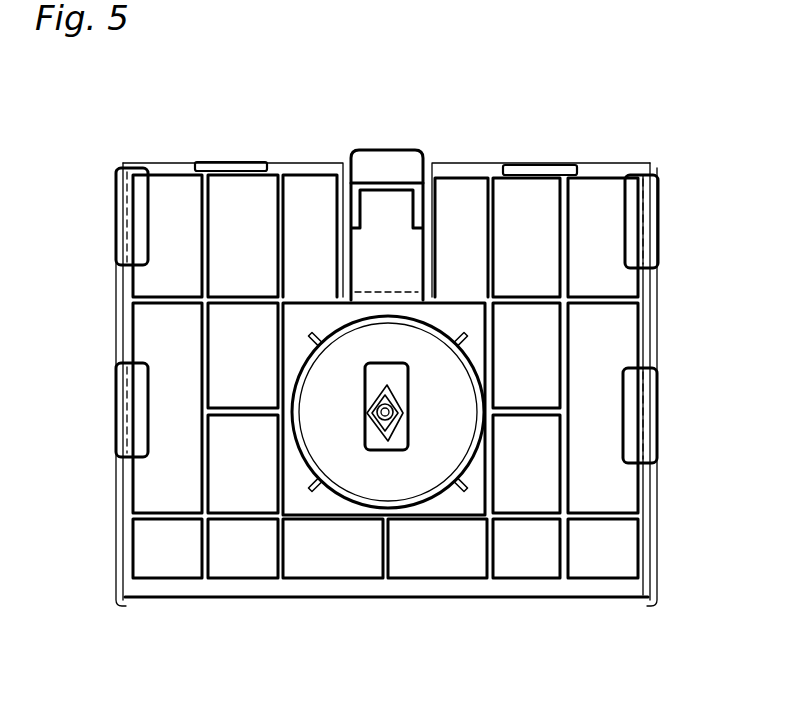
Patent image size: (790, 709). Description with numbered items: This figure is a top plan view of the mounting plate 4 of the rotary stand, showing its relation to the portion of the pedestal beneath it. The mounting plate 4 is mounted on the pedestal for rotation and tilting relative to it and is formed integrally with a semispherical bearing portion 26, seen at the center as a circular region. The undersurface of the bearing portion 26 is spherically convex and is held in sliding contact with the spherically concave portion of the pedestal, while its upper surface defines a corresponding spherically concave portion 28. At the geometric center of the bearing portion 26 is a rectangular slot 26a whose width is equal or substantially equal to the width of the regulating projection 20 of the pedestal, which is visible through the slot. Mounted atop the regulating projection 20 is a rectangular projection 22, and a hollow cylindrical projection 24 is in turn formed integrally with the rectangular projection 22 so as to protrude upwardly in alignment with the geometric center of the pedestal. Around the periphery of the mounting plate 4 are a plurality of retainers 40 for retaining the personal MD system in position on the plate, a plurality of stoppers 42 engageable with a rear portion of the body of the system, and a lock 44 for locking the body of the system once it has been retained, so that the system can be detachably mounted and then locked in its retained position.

The mounting plate 4 is at (608, 163).
The regulating projection 20 is at (366, 435).
The rectangular projection 22 is at (366, 383).
The hollow cylindrical projection 24 is at (393, 408).
The semispherical bearing portion 26 is at (412, 503).
The rectangular slot 26a is at (380, 442).
The spherically concave portion 28 is at (452, 442).
The retainers 40 is at (138, 227).
The stoppers 42 is at (223, 165).
The lock 44 is at (388, 183).